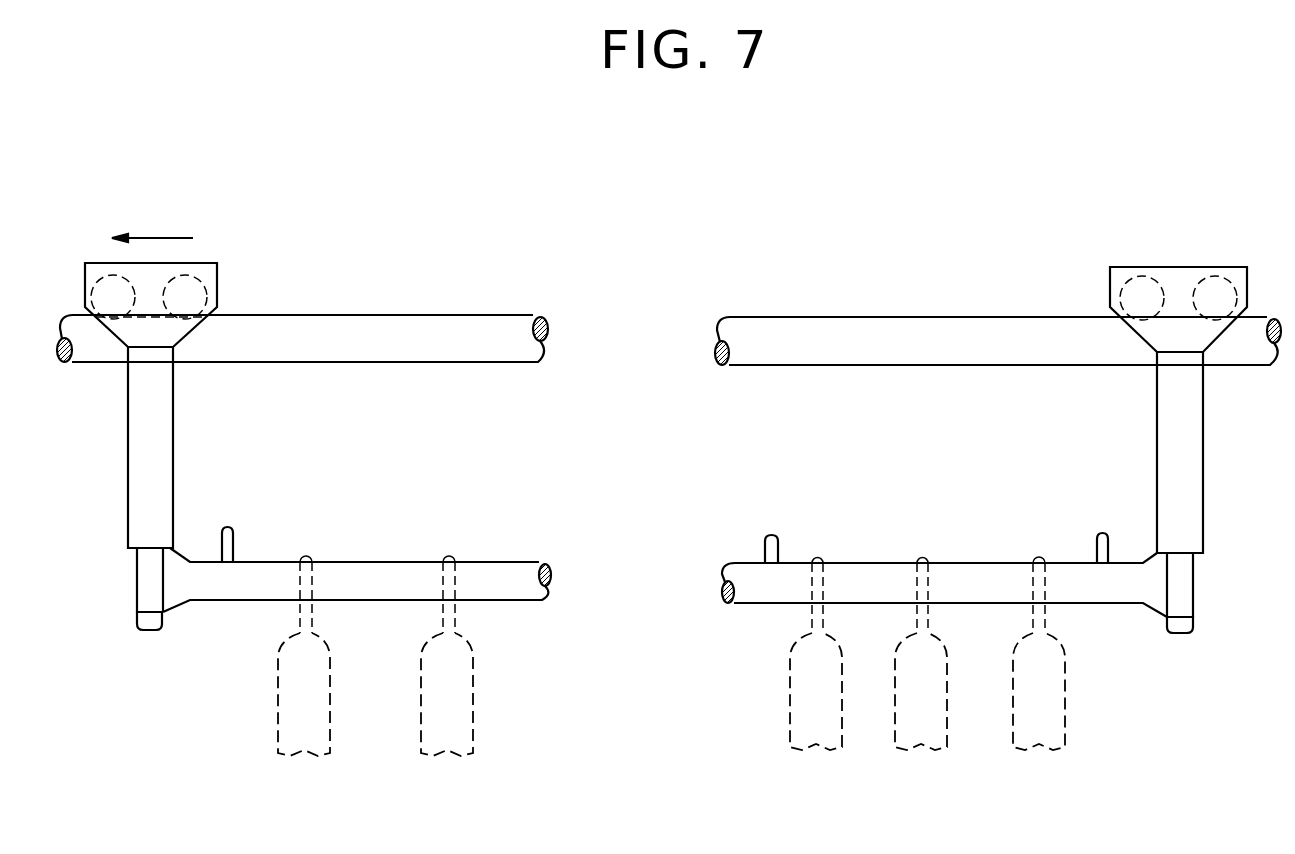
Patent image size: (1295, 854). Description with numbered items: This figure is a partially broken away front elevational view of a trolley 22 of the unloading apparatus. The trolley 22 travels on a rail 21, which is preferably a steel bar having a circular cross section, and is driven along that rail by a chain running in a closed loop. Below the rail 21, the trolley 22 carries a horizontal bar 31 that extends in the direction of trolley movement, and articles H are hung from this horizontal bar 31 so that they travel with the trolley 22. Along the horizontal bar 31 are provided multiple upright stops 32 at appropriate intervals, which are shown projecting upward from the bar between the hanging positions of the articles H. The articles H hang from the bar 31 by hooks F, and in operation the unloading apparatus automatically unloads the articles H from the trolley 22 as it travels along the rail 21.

The rail 21 is at (883, 318).
The trolley 22 is at (1152, 262).
The horizontal bar 31 is at (852, 562).
The upright stops 32 is at (235, 525).
The hook F is at (456, 612).
The articles H is at (487, 668).